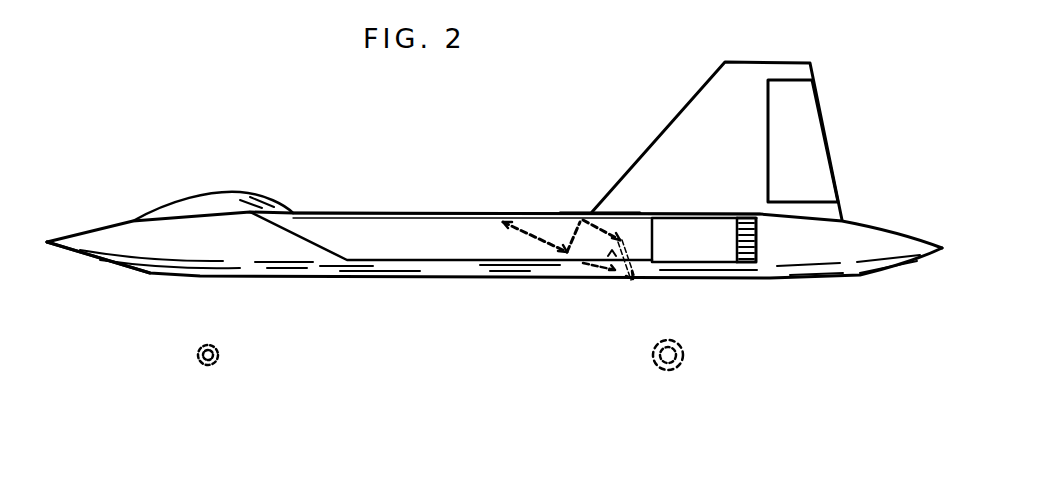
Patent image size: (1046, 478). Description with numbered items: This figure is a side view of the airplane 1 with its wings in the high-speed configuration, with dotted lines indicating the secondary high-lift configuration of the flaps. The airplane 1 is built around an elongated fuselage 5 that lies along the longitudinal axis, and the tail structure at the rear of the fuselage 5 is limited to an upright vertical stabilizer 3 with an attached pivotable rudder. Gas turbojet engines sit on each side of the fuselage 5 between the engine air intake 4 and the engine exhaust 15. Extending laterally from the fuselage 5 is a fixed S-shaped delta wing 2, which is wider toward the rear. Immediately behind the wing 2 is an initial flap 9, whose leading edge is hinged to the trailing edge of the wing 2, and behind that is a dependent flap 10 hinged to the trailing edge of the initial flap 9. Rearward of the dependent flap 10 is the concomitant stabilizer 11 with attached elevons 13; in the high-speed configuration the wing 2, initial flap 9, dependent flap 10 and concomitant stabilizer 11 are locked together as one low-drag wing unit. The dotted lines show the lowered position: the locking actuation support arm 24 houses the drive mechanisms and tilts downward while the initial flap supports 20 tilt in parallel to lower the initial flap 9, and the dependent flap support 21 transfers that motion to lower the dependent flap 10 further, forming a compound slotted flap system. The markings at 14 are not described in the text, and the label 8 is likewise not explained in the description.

The airplane 1 is at (120, 221).
The fixed delta wing 2 is at (374, 212).
The vertical stabilizer 3 is at (687, 102).
The engine air intake 4 is at (302, 238).
The fuselage 5 is at (175, 276).
The tail root component 8 is at (703, 212).
The initial flap 9 is at (582, 213).
The dependent flap 10 is at (652, 222).
The concomitant stabilizer 11 is at (703, 212).
The elevon 13 is at (703, 212).
The exhaust cross-section 14 is at (208, 366).
The engine exhaust 15 is at (750, 262).
The initial flap support 20 is at (575, 256).
The dependent flap support 21 is at (618, 250).
The locking actuation support arm 24 is at (528, 217).